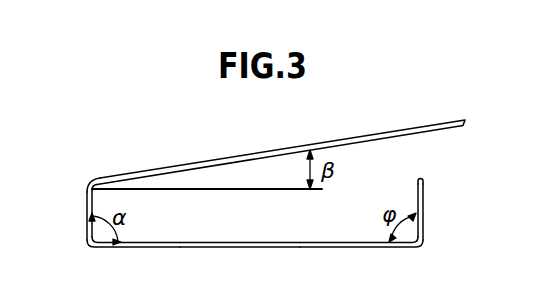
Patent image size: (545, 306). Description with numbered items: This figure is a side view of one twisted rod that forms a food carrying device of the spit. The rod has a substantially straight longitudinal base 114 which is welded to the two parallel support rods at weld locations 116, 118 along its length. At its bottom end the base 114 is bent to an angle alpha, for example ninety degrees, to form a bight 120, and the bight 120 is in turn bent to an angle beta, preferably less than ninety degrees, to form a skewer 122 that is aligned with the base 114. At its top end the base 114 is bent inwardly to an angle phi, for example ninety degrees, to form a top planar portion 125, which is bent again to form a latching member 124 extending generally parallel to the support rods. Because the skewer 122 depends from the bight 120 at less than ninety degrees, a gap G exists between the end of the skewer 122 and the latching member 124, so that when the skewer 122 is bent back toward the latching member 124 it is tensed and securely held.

The longitudinal base 114 is at (252, 247).
The weld location 116 is at (186, 249).
The weld location 118 is at (316, 249).
The bight 120 is at (87, 213).
The skewer 122 is at (225, 158).
The latching member 124 is at (426, 180).
The top planar portion 125 is at (419, 203).
The gap G is at (418, 160).